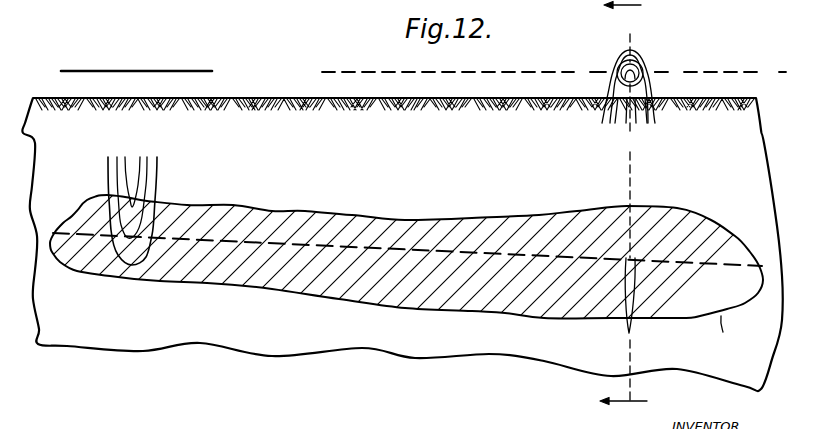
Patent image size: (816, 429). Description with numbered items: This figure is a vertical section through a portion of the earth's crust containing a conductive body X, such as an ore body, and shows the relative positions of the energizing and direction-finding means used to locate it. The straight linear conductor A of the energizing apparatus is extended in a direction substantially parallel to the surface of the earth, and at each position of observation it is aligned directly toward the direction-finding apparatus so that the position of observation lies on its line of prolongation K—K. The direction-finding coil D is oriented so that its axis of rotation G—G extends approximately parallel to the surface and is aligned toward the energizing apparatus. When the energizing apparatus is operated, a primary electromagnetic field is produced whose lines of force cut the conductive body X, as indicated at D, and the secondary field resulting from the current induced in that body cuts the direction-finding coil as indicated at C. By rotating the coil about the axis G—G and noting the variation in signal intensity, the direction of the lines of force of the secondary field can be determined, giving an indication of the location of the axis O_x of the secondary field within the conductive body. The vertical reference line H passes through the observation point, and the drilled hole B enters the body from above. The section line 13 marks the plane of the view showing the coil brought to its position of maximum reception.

The straight linear conductor A is at (154, 62).
The drill hole / borehole B is at (143, 193).
The secondary field cutting the direction-finding coil C is at (619, 63).
The coil D is at (646, 63).
The axis of rotation G is at (629, 75).
The vertical section axis H is at (629, 207).
The line of prolongation K is at (544, 73).
The axis of the secondary field O is at (626, 310).
The conductive body X is at (723, 337).
The section line 13 is at (635, 212).